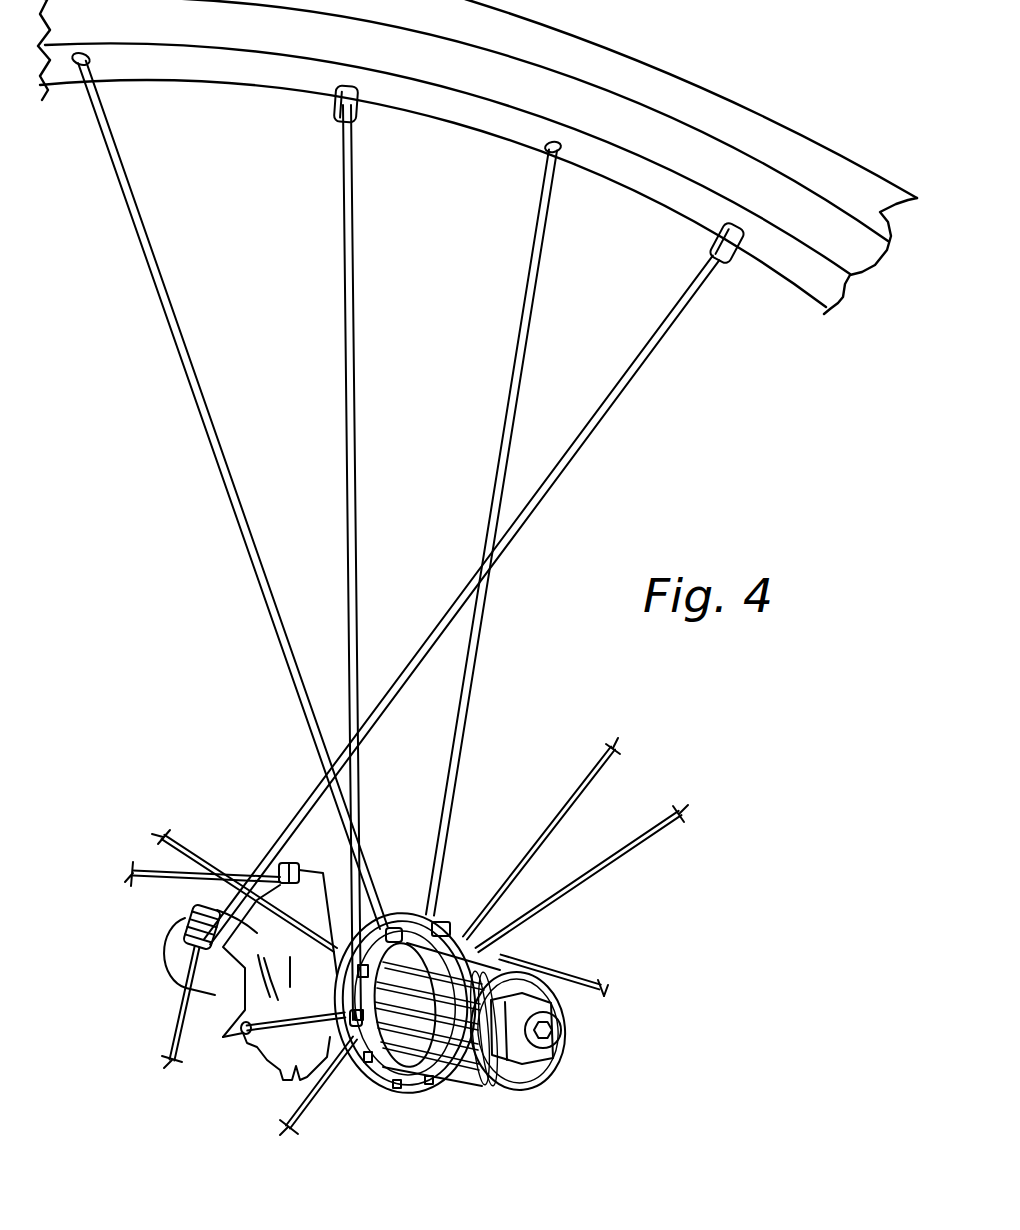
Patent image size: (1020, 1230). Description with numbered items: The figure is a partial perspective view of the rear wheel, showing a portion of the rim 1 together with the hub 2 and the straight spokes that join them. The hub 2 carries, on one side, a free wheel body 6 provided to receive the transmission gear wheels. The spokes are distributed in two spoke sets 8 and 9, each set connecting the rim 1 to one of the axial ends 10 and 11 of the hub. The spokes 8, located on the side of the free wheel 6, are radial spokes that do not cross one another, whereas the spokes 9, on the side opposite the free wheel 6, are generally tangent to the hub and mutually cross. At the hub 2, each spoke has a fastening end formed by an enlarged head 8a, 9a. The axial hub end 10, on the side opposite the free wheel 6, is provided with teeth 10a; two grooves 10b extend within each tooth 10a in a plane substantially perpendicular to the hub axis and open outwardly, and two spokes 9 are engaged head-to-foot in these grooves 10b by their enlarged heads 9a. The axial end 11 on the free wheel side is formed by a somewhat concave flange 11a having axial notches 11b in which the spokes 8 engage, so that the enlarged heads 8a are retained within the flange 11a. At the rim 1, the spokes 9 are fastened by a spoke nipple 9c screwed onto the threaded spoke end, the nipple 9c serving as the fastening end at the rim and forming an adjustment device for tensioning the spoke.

The rim 1 is at (656, 82).
The hub 2 is at (388, 953).
The free wheel body 6 is at (500, 950).
The spoke set 8 is at (198, 408).
The enlarged head 8a is at (392, 908).
The spoke set 9 is at (353, 335).
The enlarged head 9a is at (185, 960).
The spoke nipple 9c is at (333, 117).
The axial hub end 10 is at (212, 1012).
The teeth 10a is at (215, 1053).
The grooves 10b is at (293, 1080).
The axial end 11 is at (415, 974).
The flange 11a is at (381, 1090).
The axial notches 11b is at (407, 1093).